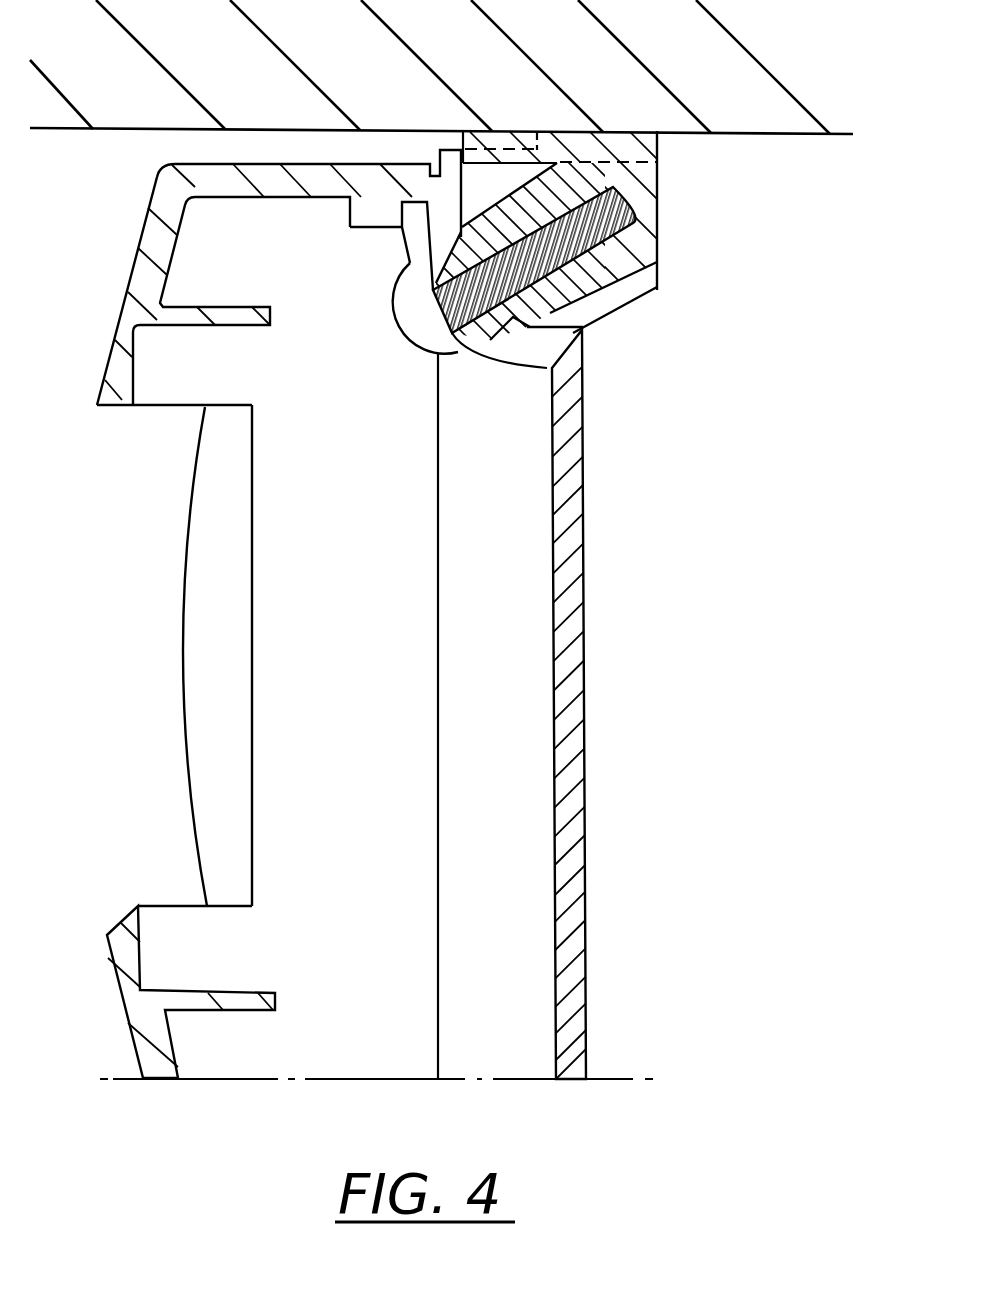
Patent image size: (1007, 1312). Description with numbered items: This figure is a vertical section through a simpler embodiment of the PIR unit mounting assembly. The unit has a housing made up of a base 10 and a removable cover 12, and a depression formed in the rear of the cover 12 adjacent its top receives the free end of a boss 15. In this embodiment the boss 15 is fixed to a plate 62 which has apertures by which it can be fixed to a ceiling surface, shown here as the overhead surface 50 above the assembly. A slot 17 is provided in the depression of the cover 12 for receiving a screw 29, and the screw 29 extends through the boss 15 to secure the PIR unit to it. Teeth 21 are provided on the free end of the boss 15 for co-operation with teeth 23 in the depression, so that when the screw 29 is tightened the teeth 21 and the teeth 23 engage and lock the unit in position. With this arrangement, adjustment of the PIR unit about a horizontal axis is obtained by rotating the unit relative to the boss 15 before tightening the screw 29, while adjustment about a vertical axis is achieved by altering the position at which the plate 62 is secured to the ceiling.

The base 10 is at (582, 462).
The removable cover 12 is at (138, 283).
The boss 15 is at (615, 263).
The slot 17 is at (410, 250).
The teeth 21 is at (530, 318).
The teeth 23 is at (507, 320).
The screw 29 is at (435, 342).
The mounting plate 50 is at (798, 134).
The plate 62 is at (499, 140).